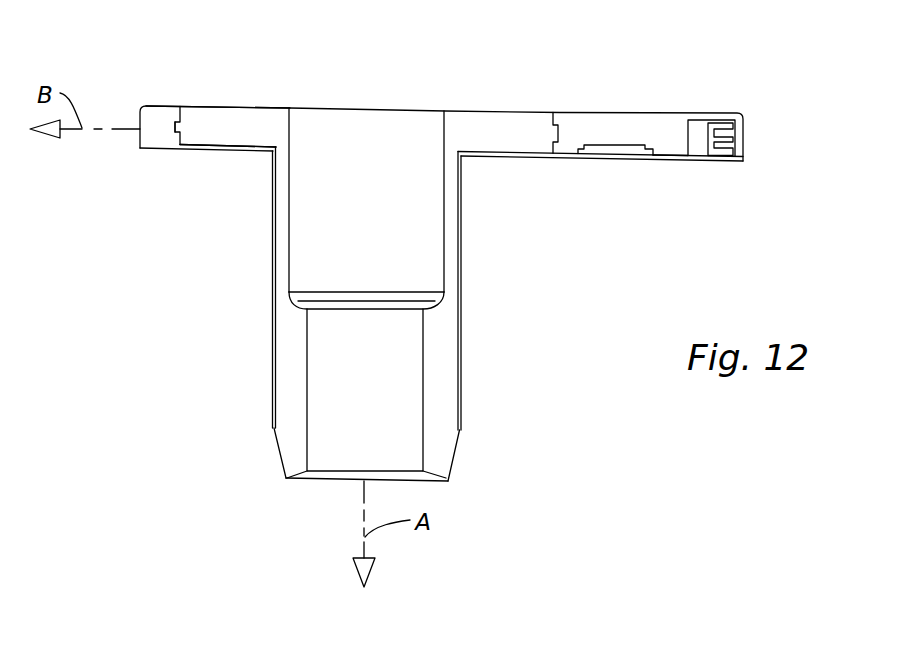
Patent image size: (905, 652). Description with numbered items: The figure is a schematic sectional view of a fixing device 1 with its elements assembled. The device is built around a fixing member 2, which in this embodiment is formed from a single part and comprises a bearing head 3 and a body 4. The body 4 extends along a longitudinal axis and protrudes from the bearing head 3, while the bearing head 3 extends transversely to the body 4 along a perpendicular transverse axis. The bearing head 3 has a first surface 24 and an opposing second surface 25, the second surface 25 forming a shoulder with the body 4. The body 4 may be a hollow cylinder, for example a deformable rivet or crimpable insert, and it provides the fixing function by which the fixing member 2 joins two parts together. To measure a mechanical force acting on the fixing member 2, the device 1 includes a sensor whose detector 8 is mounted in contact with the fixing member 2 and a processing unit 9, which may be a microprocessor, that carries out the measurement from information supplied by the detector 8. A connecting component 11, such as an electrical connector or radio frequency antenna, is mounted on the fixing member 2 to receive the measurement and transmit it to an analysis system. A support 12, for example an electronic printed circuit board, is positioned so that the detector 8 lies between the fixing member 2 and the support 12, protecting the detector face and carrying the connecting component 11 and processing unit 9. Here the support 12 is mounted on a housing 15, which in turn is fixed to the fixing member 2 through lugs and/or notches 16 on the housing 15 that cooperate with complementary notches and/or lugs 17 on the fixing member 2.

The fixing device 1 is at (628, 66).
The fixing member 2 is at (248, 315).
The bearing head 3 is at (243, 127).
The body 4 is at (440, 363).
The detector 8 is at (492, 151).
The processing unit 9 is at (622, 152).
The connecting component 11 is at (698, 130).
The support 12 is at (573, 157).
The housing 15 is at (677, 134).
The lugs and/or notches 16 is at (173, 127).
The notches and/or lugs 17 is at (178, 128).
The first surface 24 is at (273, 107).
The second surface 25 is at (253, 137).